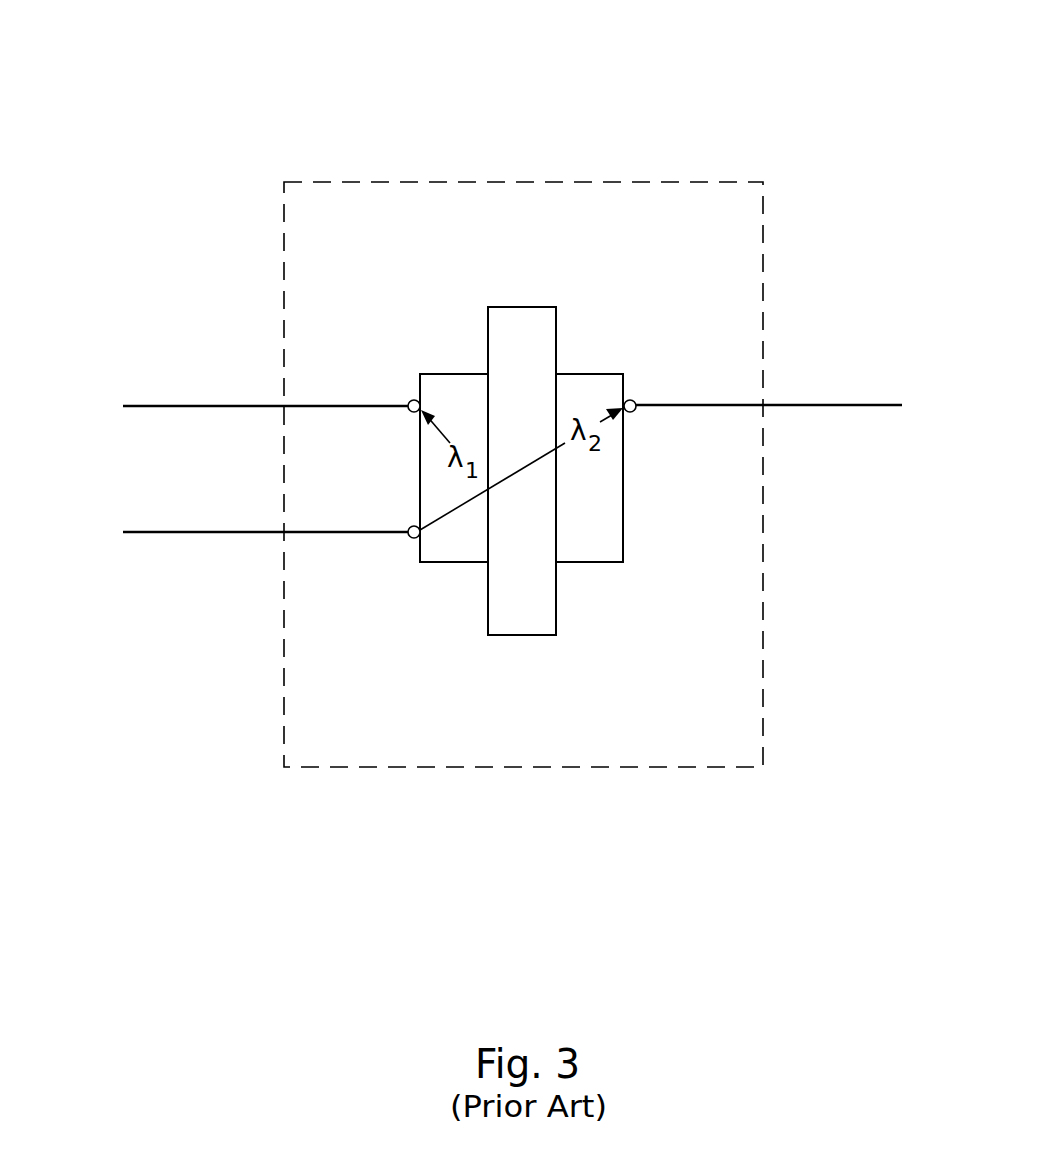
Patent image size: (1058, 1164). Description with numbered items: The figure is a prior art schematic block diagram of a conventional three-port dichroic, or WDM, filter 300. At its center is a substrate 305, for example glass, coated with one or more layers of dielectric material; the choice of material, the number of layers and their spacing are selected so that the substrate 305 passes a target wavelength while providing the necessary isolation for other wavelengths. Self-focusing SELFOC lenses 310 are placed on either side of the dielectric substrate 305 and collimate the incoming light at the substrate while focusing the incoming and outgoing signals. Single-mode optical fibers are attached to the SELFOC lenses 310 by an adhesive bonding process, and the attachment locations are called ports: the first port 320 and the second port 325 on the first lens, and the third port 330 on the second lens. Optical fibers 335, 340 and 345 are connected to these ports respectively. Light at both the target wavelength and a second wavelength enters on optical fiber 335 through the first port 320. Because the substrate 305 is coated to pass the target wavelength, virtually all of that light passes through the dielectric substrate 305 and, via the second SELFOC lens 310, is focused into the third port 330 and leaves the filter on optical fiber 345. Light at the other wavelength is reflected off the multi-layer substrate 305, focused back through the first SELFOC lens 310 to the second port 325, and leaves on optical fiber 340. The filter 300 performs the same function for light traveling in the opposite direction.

The three-port dichroic filter 300 is at (404, 577).
The substrate 305 is at (488, 603).
The SELFOC lens 310 is at (435, 373).
The port 1 320 is at (408, 537).
The port 2 325 is at (409, 401).
The port 3 330 is at (636, 401).
The optical fiber 335 is at (240, 567).
The optical fiber 340 is at (246, 356).
The optical fiber 345 is at (788, 443).